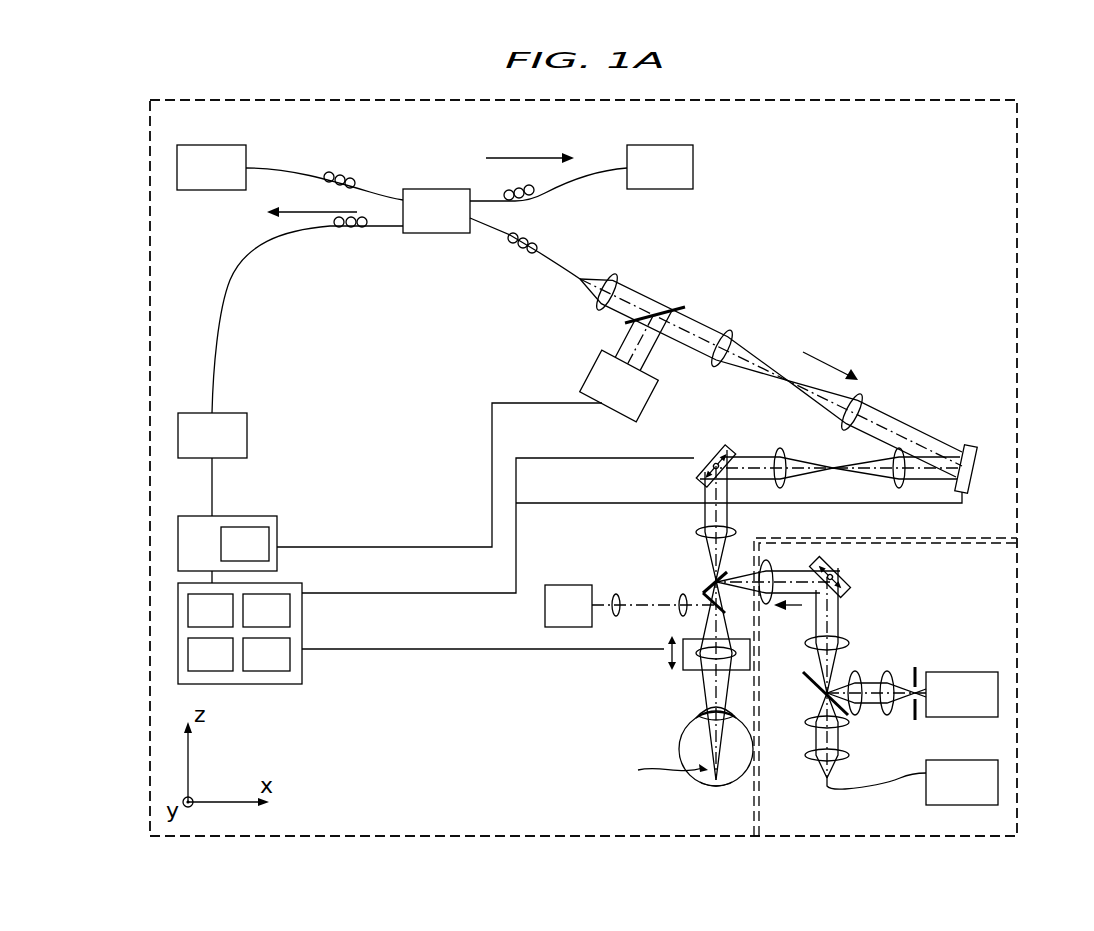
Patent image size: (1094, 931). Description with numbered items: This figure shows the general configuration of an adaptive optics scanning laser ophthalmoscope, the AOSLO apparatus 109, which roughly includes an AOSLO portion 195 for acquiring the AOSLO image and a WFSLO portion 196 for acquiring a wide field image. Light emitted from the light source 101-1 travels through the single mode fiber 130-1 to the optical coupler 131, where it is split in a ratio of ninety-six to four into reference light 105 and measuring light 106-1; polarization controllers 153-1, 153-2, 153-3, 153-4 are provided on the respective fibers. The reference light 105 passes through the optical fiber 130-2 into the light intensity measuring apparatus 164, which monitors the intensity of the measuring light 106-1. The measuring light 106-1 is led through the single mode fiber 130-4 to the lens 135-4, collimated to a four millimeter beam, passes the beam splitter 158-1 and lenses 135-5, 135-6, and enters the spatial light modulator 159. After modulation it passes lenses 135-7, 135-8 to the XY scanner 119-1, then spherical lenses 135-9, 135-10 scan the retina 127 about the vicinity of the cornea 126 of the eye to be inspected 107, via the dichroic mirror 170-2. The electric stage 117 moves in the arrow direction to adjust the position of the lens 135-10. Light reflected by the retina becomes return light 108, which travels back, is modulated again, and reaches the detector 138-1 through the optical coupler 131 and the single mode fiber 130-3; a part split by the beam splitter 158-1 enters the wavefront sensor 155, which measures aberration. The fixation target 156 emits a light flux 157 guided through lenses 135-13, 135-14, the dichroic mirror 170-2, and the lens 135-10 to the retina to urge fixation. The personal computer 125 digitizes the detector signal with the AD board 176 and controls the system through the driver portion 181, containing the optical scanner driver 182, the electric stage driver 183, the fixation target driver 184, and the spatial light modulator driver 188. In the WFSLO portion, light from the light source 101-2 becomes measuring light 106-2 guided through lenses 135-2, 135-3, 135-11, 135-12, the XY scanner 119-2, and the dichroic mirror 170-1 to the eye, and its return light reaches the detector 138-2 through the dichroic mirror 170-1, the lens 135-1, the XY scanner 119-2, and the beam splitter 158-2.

The AOSLO apparatus 109 is at (222, 84).
The AOSLO portion 195 is at (1017, 400).
The WFSLO portion 196 is at (1017, 570).
The light source 101-1 is at (211, 167).
The light source 101-2 is at (962, 782).
The single mode fiber 130-1 is at (278, 168).
The optical fiber 130-2 is at (596, 171).
The single mode fiber 130-3 is at (290, 232).
The single mode fiber 130-4 is at (534, 258).
The polarization controller 153-1 is at (338, 173).
The polarization controller 153-2 is at (505, 192).
The polarization controller 153-3 is at (350, 228).
The polarization controller 153-4 is at (534, 247).
The optical coupler 131 is at (436, 211).
The light intensity measuring apparatus 164 is at (660, 167).
The reference light 105 is at (530, 147).
The return light 108 is at (487, 483).
The measuring light 106-1 is at (657, 492).
The measuring light 106-2 is at (838, 607).
The detector 138-1 is at (212, 435).
The detector 138-2 is at (962, 694).
The lens 135-1 is at (768, 560).
The lens 135-2 is at (848, 640).
The lens 135-3 is at (899, 718).
The lens 135-4 is at (598, 309).
The lens 135-5 is at (730, 338).
The lens 135-6 is at (860, 400).
The lens 135-7 is at (897, 486).
The lens 135-8 is at (779, 450).
The spherical lens 135-9 is at (698, 532).
The spherical lens 135-10 is at (698, 655).
The lens 135-11 is at (802, 713).
The lens 135-12 is at (827, 755).
The lens 135-13 is at (614, 617).
The lens 135-14 is at (682, 617).
The beam splitter 158-1 is at (687, 306).
The beam splitter 158-2 is at (845, 672).
The wavefront sensor 155 is at (619, 386).
The spatial light modulator 159 is at (978, 470).
The XY scanner 119-1 is at (706, 450).
The XY scanner 119-2 is at (846, 566).
The personal computer 125 is at (227, 543).
The AD board 176 is at (245, 544).
The driver portion 181 is at (303, 584).
The optical scanner driver 182 is at (210, 610).
The electric stage driver 183 is at (210, 654).
The fixation target driver 184 is at (266, 654).
The spatial light modulator driver 188 is at (266, 610).
The fixation target 156 is at (568, 606).
The light flux 157 is at (650, 603).
The dichroic mirror 170-1 is at (706, 587).
The dichroic mirror 170-2 is at (712, 603).
The electric stage 117 is at (668, 660).
The eye to be inspected 107 is at (680, 748).
The cornea 126 is at (695, 712).
The retina 127 is at (712, 781).